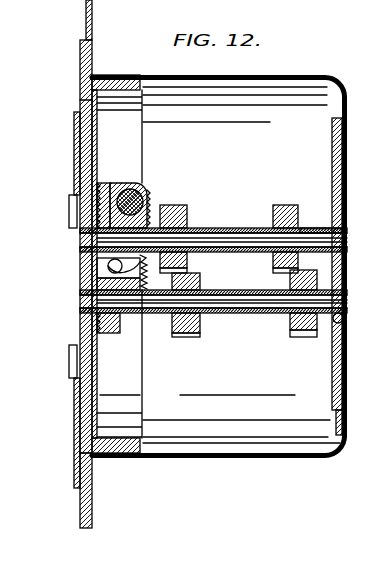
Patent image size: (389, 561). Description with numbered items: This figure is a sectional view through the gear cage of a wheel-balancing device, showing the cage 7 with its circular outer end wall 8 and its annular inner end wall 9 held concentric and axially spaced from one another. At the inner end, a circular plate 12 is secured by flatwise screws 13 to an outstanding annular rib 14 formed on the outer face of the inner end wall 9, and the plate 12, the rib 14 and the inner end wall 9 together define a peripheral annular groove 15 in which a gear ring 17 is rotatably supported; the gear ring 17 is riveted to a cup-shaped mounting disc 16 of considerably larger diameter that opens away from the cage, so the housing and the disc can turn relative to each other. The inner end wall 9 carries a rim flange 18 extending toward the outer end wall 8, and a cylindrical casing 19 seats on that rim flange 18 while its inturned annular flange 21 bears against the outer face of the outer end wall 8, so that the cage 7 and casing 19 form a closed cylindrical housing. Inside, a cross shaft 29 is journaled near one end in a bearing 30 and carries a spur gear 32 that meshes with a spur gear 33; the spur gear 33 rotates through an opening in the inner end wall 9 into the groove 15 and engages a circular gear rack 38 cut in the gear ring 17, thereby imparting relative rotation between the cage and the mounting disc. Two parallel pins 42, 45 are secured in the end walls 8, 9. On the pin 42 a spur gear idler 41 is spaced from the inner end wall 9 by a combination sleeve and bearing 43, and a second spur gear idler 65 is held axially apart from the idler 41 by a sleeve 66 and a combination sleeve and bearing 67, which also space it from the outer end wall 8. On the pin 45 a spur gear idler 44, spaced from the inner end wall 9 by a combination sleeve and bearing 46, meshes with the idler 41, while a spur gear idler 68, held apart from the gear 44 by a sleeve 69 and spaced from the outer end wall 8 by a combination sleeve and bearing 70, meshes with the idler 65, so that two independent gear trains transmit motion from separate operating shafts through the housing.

The cage 7 is at (290, 76).
The circular outer end wall 8 is at (342, 191).
The annular inner end wall 9 is at (97, 132).
The circular plate 12 is at (74, 145).
The flatwise screws 13 is at (69, 211).
The annular rib 14 is at (74, 387).
The peripheral annular groove 15 is at (84, 390).
The cup-shaped mounting disc 16 is at (92, 513).
The gear ring 17 is at (81, 41).
The rim flange 18 is at (123, 80).
The cylindrical casing 19 is at (223, 458).
The inturned annular flange 21 is at (342, 396).
The cross shaft 29 is at (143, 180).
The bearing 30 is at (120, 183).
The spur gear 32 is at (143, 190).
The spur gear 33 is at (97, 268).
The circular gear rack 38 is at (80, 100).
The spur gear idler 41 is at (200, 278).
The pin 42 is at (220, 300).
The combination sleeve and bearing 43 is at (153, 320).
The spur gear idler 44 is at (187, 212).
The pin 45 is at (203, 237).
The combination sleeve and bearing 46 is at (147, 207).
The spur gear idler 65 is at (297, 337).
The sleeve 66 is at (263, 313).
The combination sleeve and bearing 67 is at (343, 318).
The spur gear idler 68 is at (287, 205).
The sleeve 69 is at (247, 228).
The combination sleeve and bearing 70 is at (313, 228).